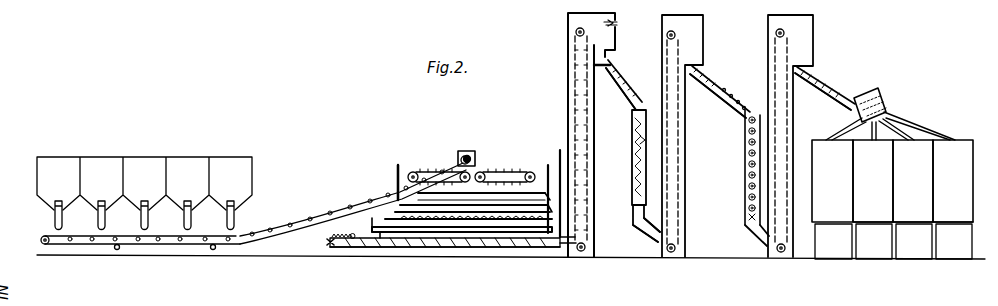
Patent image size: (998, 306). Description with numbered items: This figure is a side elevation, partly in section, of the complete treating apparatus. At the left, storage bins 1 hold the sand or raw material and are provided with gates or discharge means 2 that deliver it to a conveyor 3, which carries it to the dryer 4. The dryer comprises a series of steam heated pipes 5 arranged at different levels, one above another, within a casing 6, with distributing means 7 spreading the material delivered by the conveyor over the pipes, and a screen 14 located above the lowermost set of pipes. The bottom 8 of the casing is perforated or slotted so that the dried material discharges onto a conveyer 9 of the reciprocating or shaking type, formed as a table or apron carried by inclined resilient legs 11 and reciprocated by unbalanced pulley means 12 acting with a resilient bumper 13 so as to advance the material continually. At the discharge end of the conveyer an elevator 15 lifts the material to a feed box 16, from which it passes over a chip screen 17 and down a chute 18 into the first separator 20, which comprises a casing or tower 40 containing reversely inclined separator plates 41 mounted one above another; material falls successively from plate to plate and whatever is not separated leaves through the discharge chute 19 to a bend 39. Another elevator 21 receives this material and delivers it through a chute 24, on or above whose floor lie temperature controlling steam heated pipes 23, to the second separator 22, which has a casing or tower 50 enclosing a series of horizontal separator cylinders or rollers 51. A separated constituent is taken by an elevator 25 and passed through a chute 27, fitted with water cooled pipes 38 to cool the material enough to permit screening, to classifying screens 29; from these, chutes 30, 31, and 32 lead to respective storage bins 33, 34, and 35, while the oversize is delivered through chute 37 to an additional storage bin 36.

The storage bins 1 is at (48, 177).
The gates or discharge means 2 is at (55, 208).
The conveyor 3 is at (312, 224).
The dryer 4 is at (516, 169).
The steam heated pipes 5 is at (415, 212).
The casing 6 is at (393, 175).
The distributing means 7 is at (428, 172).
The bottom 8 is at (384, 237).
The conveyer 9 is at (407, 242).
The inclined resilient legs 11 is at (470, 248).
The unbalanced pulley means 12 is at (360, 247).
The resilient bumper 13 is at (330, 244).
The screen 14 is at (447, 220).
The elevator 15 is at (568, 92).
The feed box 16 is at (617, 40).
The chip screen 17 is at (625, 78).
The chute 18 is at (620, 82).
The discharge chute 19 is at (642, 237).
The separator 20 is at (630, 161).
The elevator 21 is at (686, 156).
The second separator 22 is at (745, 192).
The steam heated pipes 23 is at (713, 81).
The chute 24 is at (728, 97).
The elevator 25 is at (790, 122).
The chute 27 is at (843, 88).
The classifying screens 29 is at (884, 104).
The chute 30 is at (848, 126).
The chute 31 is at (876, 142).
The chute 32 is at (913, 142).
The storage bin 33 is at (892, 199).
The storage bin 34 is at (873, 181).
The storage bin 35 is at (913, 181).
The storage bin 36 is at (953, 181).
The chute 37 is at (920, 128).
The water cooled pipes 38 is at (818, 73).
The chute bend 39 is at (632, 232).
The casing or tower 40 is at (636, 143).
The separator plates 41 is at (652, 139).
The casing or tower 50 is at (745, 208).
The separator cylinders or rollers 51 is at (748, 151).